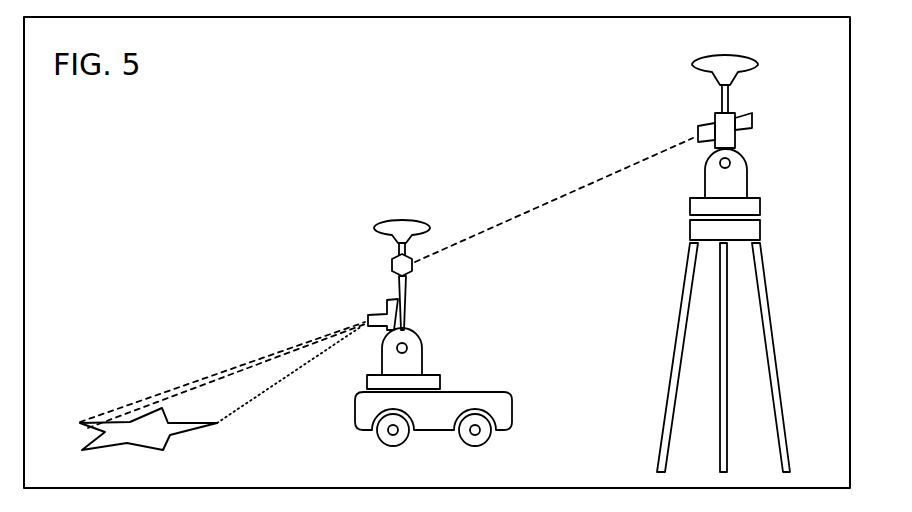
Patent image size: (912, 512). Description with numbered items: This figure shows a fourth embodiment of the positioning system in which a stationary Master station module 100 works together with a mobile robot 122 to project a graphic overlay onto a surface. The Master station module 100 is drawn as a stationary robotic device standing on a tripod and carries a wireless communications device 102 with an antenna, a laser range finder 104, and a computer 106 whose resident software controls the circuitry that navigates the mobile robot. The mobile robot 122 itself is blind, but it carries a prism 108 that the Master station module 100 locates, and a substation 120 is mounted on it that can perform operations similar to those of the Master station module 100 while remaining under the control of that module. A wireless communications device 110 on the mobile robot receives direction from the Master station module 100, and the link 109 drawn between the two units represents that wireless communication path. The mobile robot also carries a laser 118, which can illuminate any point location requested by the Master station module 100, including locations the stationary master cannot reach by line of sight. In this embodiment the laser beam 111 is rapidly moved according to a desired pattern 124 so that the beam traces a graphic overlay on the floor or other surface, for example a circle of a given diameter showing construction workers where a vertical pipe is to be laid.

The Master station module 100 is at (605, 95).
The wireless communications device 102 is at (758, 84).
The laser range finder 104 is at (761, 130).
The computer 106 is at (740, 310).
The prism 108 is at (437, 292).
The communication link 109 is at (547, 203).
The wireless communications device 110 is at (441, 231).
The laser beam 111 is at (273, 347).
The laser 118 is at (425, 314).
The substation 120 is at (433, 358).
The mobile robot 122 is at (473, 407).
The desired pattern 124 is at (171, 441).